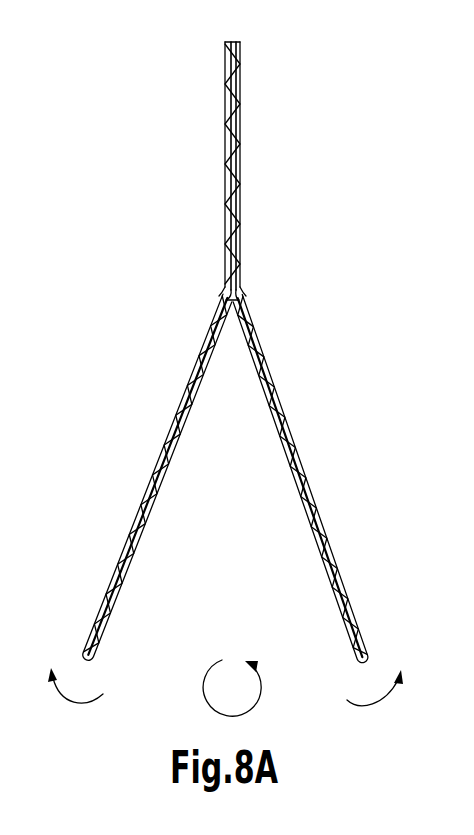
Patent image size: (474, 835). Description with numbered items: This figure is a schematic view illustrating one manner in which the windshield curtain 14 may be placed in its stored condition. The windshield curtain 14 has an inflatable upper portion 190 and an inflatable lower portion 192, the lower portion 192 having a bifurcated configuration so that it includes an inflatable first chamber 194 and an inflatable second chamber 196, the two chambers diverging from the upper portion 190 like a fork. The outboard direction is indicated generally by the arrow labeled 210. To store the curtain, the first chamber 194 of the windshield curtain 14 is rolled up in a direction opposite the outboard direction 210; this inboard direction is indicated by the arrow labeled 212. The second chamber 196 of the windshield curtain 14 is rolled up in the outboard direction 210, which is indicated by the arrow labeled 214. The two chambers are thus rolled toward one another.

The windshield curtain 14 is at (140, 133).
The inflatable upper portion 190 is at (241, 160).
The inflatable lower portion 192 is at (283, 460).
The inflatable first chamber 194 is at (168, 436).
The inflatable second chamber 196 is at (292, 470).
The outboard direction 210 is at (251, 711).
The inboard direction 212 is at (75, 703).
The outboard rolling direction 214 is at (378, 706).